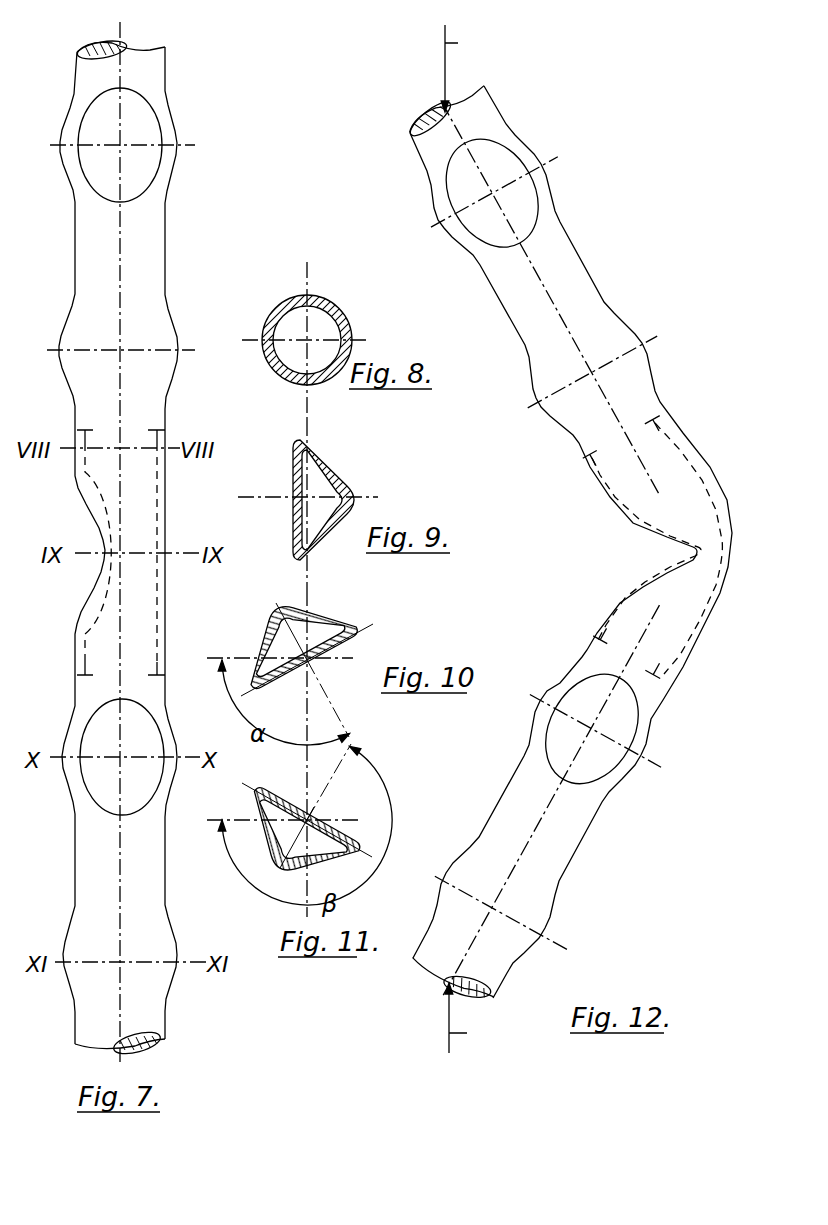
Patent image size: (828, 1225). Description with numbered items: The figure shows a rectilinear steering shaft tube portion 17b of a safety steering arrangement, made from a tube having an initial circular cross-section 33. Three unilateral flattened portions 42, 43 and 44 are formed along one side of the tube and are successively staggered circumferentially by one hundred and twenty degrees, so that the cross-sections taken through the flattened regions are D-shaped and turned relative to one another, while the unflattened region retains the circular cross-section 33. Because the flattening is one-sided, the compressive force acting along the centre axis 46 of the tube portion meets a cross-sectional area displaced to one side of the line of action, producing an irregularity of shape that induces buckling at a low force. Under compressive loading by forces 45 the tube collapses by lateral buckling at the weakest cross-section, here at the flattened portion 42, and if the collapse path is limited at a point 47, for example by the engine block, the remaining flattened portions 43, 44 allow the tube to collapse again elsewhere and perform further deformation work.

In FIG. 7, the steering shaft tube portion 17b is at (167, 296).
In FIG. 12, the steering shaft tube portion 17b is at (584, 266).
In FIG. 8, the initial circular cross-section 33 is at (336, 316).
In FIG. 7, the flattened portion 42 is at (93, 582).
In FIG. 9, the flattened portion 42 is at (293, 475).
In FIG. 12, the flattened portion 42 is at (695, 548).
In FIG. 7, the flattened portion 43 is at (100, 778).
In FIG. 10, the flattened portion 43 is at (331, 666).
In FIG. 12, the flattened portion 43 is at (618, 730).
In FIG. 7, the flattened portion 44 is at (142, 942).
In FIG. 11, the flattened portion 44 is at (333, 814).
In FIG. 12, the forces 45 is at (469, 540).
In FIG. 7, the centre axis 46 is at (122, 236).
In FIG. 12, the point 47 is at (732, 553).